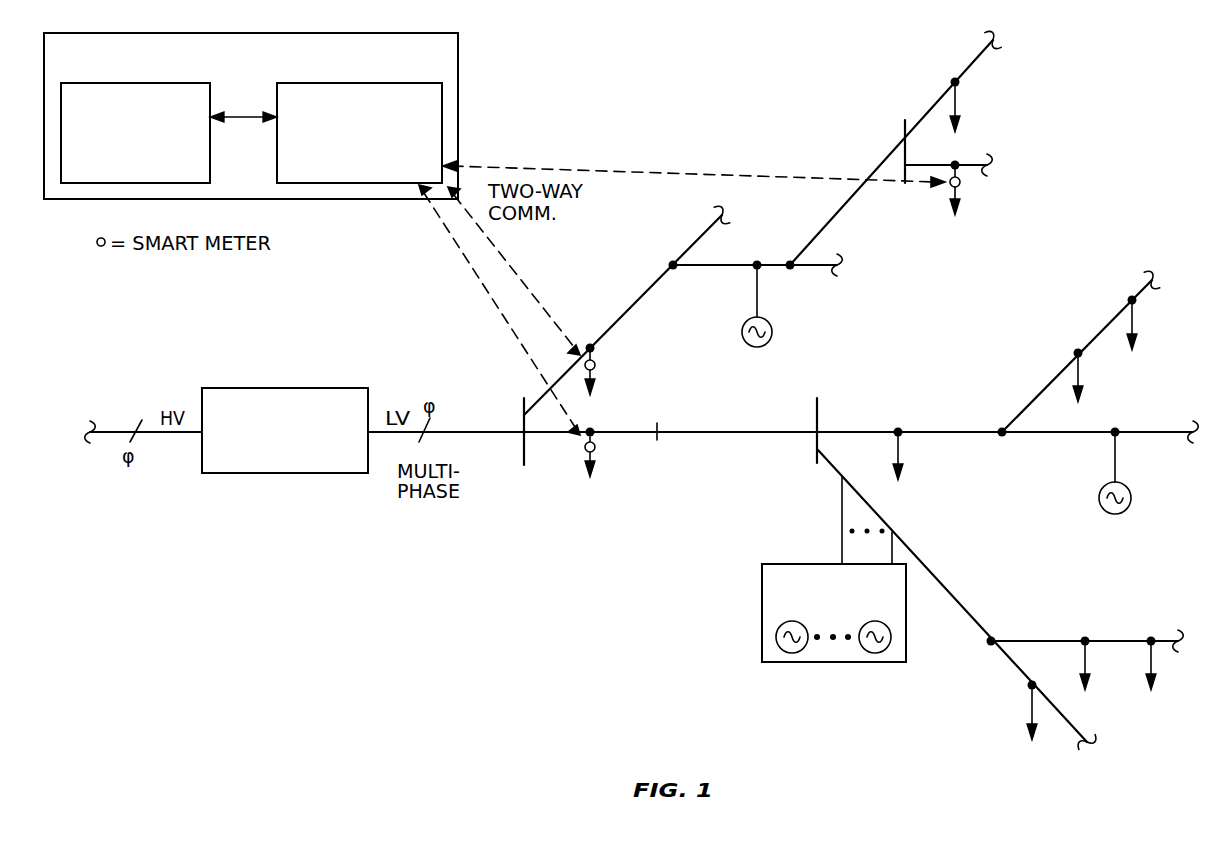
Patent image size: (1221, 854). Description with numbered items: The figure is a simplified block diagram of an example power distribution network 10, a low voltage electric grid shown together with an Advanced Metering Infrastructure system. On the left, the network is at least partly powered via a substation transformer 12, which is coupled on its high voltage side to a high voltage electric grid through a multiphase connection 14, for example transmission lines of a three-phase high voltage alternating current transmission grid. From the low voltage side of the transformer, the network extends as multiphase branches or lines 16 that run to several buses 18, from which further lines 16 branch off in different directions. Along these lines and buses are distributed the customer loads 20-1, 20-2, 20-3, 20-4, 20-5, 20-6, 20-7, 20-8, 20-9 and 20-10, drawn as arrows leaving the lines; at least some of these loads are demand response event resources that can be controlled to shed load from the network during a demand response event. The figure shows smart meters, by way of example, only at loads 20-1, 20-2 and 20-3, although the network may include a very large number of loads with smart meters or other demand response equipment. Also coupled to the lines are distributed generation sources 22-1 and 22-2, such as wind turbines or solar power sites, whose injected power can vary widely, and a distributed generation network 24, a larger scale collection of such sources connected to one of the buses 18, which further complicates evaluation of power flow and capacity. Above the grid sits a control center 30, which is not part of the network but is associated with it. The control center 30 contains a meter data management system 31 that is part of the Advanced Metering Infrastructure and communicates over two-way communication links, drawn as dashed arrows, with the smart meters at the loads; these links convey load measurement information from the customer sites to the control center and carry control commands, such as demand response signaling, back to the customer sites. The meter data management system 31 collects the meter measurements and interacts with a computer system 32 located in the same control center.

The power distribution network 10 is at (400, 638).
The substation transformer 12 is at (285, 430).
The multiphase connection 14 is at (117, 432).
The multiphase branches or lines 16 is at (458, 433).
The buses 18 is at (527, 448).
The load 20-1 is at (611, 457).
The load 20-2 is at (611, 373).
The load 20-3 is at (975, 189).
The load 20-4 is at (975, 106).
The load 20-5 is at (919, 456).
The load 20-6 is at (1098, 377).
The load 20-7 is at (1152, 324).
The load 20-8 is at (1105, 666).
The load 20-9 is at (1172, 666).
The load 20-10 is at (1005, 714).
The distributed generation source 22-1 is at (773, 340).
The distributed generation source 22-2 is at (1130, 508).
The distributed generation network 24 is at (783, 662).
The control center 30 is at (251, 116).
The meter data management system 31 is at (359, 133).
The computer system 32 is at (135, 133).